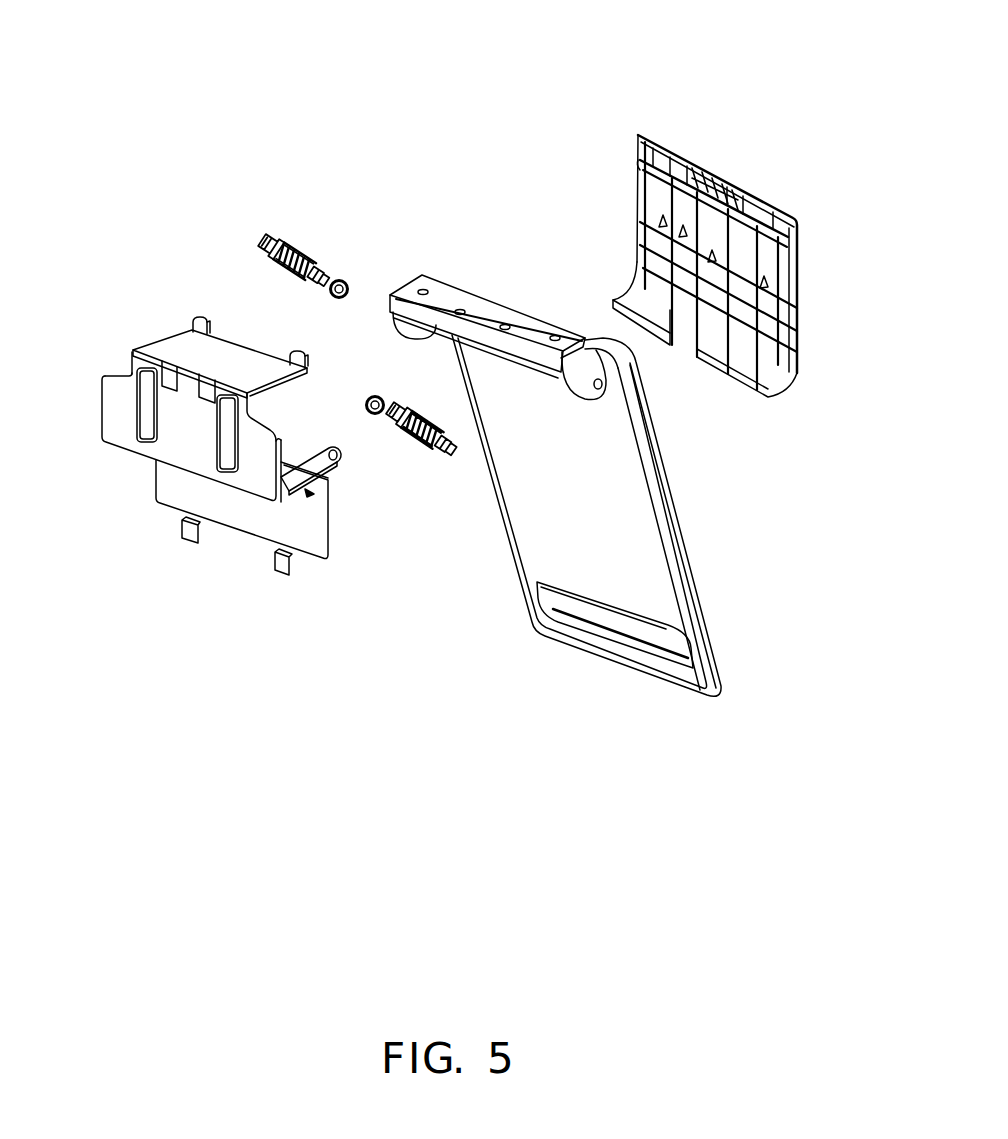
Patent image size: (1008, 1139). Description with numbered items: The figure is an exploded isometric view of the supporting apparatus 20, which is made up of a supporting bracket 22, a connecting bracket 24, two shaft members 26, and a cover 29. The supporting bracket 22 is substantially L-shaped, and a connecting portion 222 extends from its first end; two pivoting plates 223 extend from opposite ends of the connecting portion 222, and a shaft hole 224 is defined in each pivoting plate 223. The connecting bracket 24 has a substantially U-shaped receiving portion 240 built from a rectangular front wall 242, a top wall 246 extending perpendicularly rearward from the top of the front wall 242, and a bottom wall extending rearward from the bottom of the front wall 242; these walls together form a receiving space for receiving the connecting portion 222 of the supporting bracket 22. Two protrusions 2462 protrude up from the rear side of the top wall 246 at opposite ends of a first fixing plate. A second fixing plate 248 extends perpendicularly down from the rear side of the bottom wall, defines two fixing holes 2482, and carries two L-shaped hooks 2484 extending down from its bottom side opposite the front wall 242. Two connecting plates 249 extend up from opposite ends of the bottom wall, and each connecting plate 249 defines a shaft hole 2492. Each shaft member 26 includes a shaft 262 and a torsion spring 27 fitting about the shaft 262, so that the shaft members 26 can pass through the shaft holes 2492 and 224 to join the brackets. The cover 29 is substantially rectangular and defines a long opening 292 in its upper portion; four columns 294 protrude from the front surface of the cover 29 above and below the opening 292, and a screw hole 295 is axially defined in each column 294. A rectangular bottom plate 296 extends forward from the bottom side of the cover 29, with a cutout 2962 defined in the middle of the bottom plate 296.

The supporting apparatus 20 is at (328, 55).
The supporting bracket 22 is at (719, 536).
The connecting portion 222 is at (485, 318).
The pivoting plate 223 is at (587, 405).
The shaft hole 224 is at (560, 402).
The connecting bracket 24 is at (147, 310).
The receiving portion 240 is at (123, 378).
The front wall 242 is at (308, 420).
The top wall 246 is at (173, 346).
The protrusion 2462 is at (302, 362).
The second fixing plate 248 is at (323, 537).
The fixing hole 2482 is at (310, 493).
The L-shaped hook 2484 is at (272, 560).
The connecting plate 249 is at (317, 478).
The shaft hole 2492 is at (338, 458).
The shaft member 26 is at (262, 248).
The shaft 262 is at (340, 277).
The torsion spring 27 is at (293, 242).
The cover 29 is at (745, 162).
The opening 292 is at (773, 210).
The column 294 is at (633, 203).
The screw hole 295 is at (713, 170).
The bottom plate 296 is at (633, 310).
The cutout 2962 is at (688, 348).